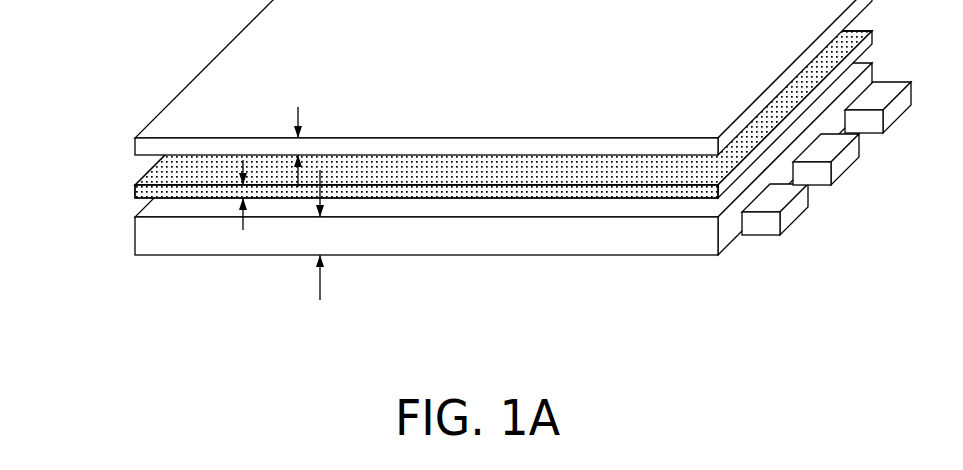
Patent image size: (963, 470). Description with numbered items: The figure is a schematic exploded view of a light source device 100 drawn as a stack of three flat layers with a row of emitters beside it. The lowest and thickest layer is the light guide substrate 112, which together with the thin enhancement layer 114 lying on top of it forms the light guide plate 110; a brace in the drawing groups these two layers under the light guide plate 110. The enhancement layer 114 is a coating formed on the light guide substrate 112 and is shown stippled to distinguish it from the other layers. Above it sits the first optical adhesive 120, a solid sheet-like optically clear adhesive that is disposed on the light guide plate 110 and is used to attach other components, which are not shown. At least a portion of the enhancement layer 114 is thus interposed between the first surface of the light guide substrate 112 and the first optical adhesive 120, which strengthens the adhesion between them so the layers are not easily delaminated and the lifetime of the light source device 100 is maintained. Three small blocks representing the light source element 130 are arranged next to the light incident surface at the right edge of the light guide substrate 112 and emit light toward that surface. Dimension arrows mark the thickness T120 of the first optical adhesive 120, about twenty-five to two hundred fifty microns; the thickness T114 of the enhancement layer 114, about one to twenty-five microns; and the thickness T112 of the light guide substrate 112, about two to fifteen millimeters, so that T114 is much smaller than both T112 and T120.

The light source device 100 is at (465, 163).
The light guide plate 110 is at (446, 147).
The light guide substrate 112 is at (135, 237).
The enhancement layer 114 is at (135, 192).
The first optical adhesive 120 is at (135, 146).
The light source element 130 is at (773, 222).
The thickness of the light guide substrate T112 is at (319, 236).
The thickness of the enhancement layer T114 is at (242, 192).
The thickness of the first optical adhesive T120 is at (297, 147).